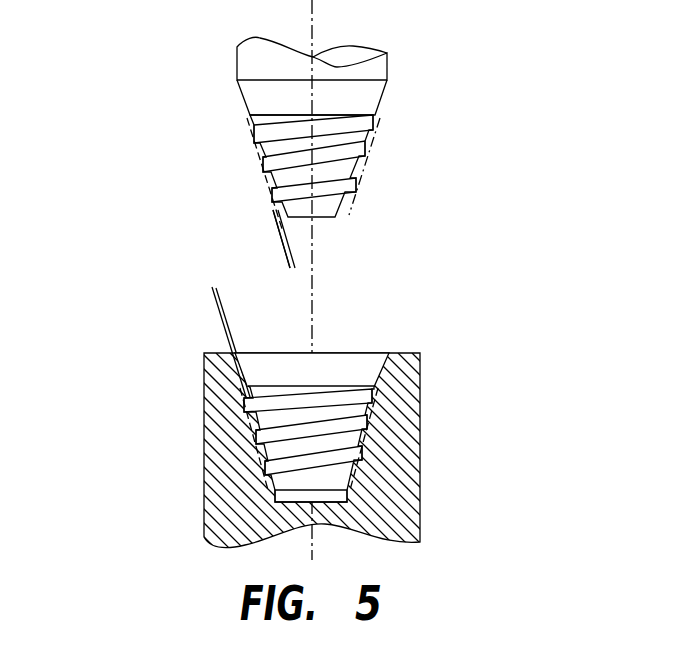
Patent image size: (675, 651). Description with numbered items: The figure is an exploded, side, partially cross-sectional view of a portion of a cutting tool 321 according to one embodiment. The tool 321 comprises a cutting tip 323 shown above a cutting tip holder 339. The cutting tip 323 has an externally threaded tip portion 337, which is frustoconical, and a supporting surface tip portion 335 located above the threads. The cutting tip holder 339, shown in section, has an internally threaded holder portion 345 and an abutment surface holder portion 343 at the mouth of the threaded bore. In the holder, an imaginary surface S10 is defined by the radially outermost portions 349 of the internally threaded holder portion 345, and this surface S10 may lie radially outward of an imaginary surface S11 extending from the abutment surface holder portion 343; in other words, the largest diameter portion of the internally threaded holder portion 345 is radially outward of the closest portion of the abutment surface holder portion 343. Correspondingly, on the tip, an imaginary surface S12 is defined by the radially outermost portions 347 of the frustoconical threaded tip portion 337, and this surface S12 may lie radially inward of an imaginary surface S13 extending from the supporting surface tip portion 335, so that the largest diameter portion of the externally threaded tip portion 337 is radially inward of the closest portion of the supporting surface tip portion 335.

The tool 321 is at (326, 280).
The cutting tip 323 is at (349, 134).
The supporting surface tip portion 335 is at (367, 96).
The externally threaded tip portion 337 is at (309, 173).
The radially outermost portions of the frustoconical threaded tip portion 347 is at (262, 200).
The cutting tip holder 339 is at (316, 448).
The abutment surface holder portion 343 is at (308, 423).
The internally threaded holder portion 345 is at (340, 460).
The radially outermost portions of the internally threaded holder portion 349 is at (254, 475).
The imaginary surface S10 is at (213, 293).
The imaginary surface S11 is at (231, 321).
The imaginary surface S12 is at (289, 253).
The imaginary surface S13 is at (283, 248).